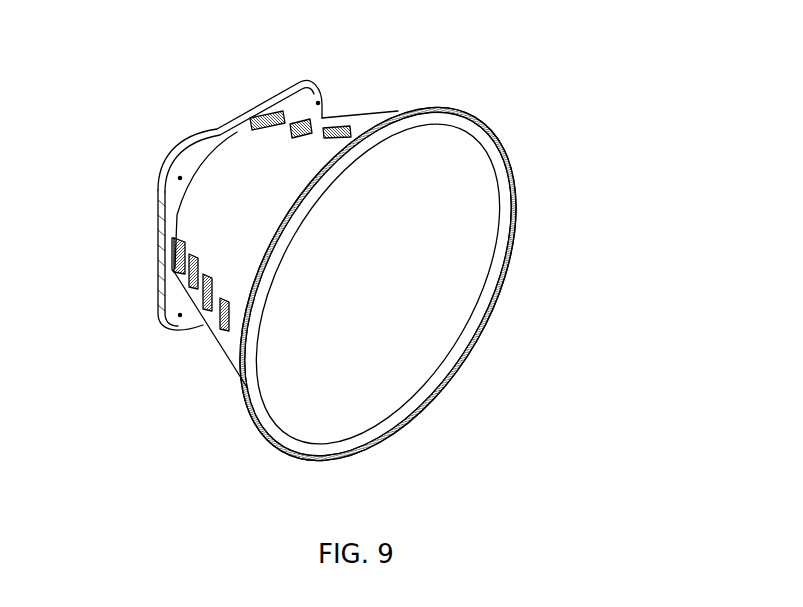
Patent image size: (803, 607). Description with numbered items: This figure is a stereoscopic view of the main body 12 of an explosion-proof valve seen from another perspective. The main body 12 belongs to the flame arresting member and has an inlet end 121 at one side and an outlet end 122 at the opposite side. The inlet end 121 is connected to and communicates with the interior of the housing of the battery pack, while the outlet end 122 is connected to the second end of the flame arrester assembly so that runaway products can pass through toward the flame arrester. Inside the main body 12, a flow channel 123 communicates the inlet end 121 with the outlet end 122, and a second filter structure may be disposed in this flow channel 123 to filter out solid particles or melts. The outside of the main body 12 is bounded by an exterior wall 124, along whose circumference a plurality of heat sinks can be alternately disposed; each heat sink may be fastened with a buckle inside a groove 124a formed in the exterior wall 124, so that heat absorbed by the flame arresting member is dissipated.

The main body 12 is at (350, 263).
The inlet end 121 is at (350, 284).
The outlet end 122 is at (524, 147).
The flow channel 123 is at (494, 272).
The exterior wall 124 is at (197, 243).
The groove 124a is at (178, 270).